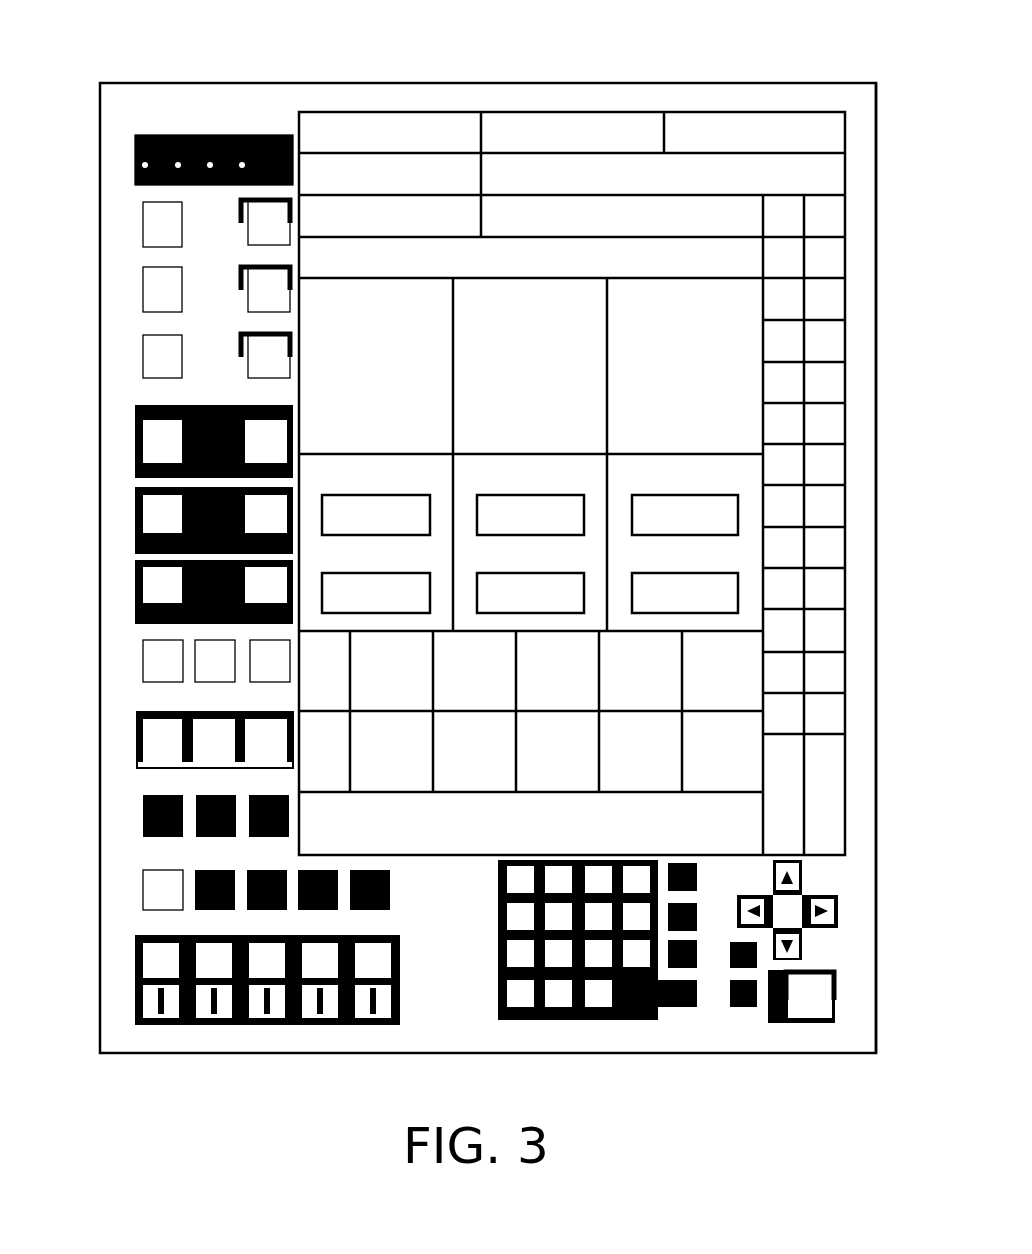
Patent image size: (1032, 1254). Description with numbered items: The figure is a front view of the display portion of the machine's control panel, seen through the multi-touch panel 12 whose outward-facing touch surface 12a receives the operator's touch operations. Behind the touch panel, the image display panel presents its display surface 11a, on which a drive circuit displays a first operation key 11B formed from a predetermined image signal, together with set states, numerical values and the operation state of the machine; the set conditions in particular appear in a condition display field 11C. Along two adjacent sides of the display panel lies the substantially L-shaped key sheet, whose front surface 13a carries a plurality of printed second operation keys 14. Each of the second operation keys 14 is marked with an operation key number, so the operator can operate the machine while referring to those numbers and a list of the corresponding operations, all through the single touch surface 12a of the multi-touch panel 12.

The multi-touch panel 12 is at (619, 80).
The touch surface 12a is at (862, 197).
The display surface 11a is at (778, 128).
The first operation key 11B is at (558, 780).
The condition display field 11C is at (530, 494).
The front surface 13a is at (220, 123).
The second operation key 14 is at (253, 366).